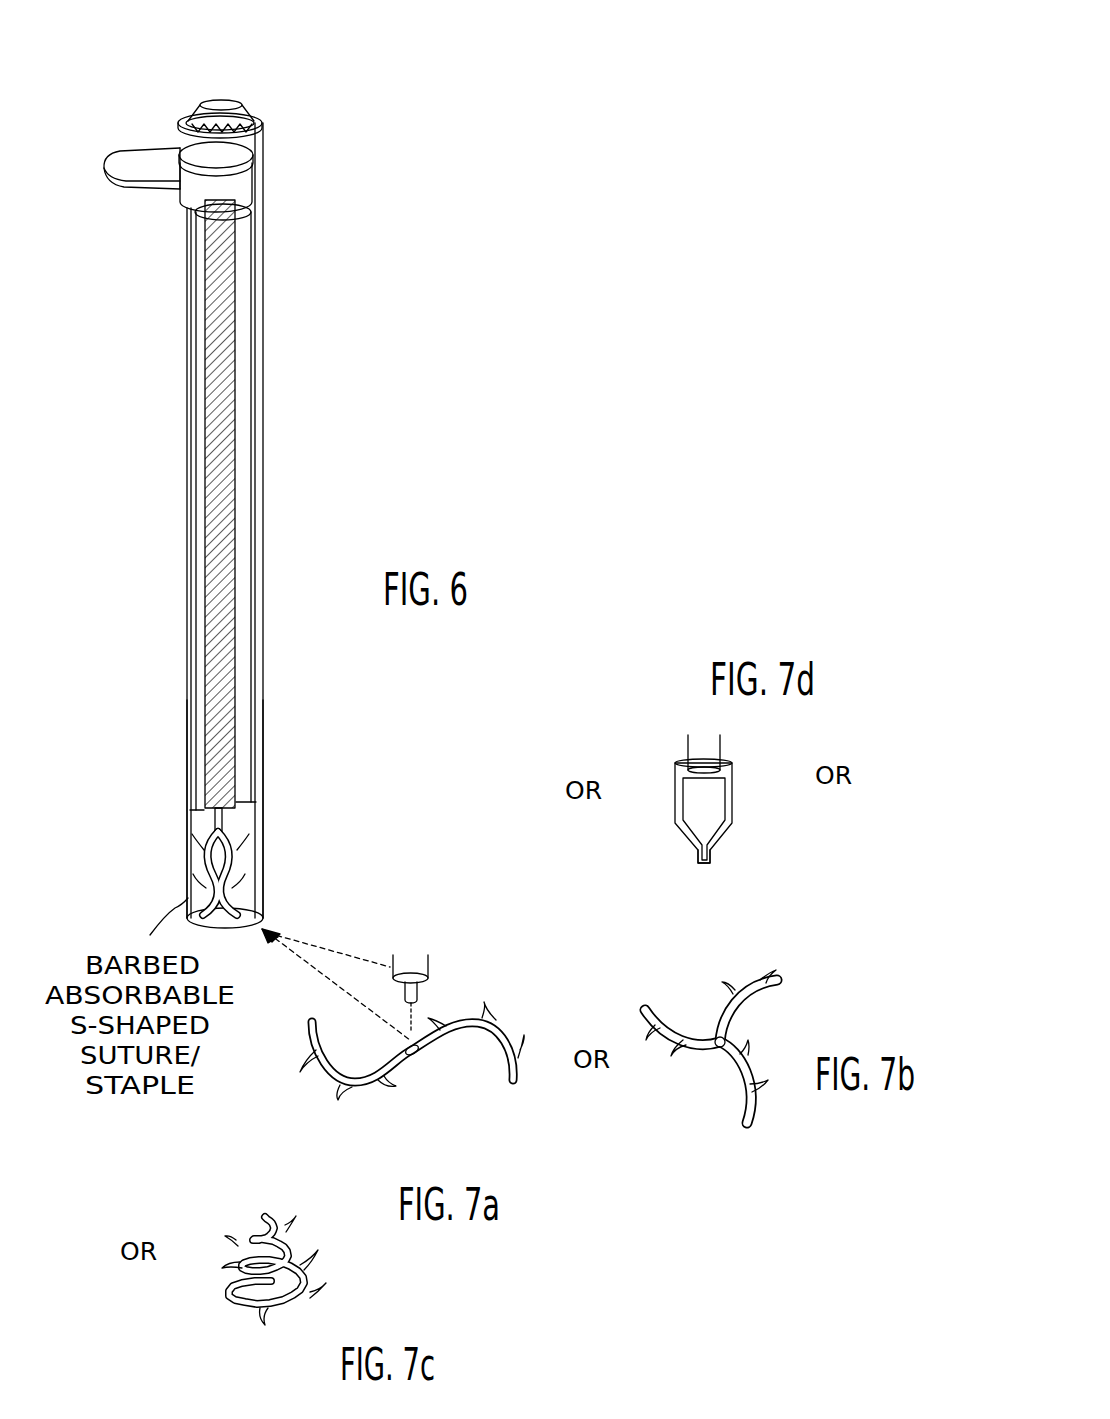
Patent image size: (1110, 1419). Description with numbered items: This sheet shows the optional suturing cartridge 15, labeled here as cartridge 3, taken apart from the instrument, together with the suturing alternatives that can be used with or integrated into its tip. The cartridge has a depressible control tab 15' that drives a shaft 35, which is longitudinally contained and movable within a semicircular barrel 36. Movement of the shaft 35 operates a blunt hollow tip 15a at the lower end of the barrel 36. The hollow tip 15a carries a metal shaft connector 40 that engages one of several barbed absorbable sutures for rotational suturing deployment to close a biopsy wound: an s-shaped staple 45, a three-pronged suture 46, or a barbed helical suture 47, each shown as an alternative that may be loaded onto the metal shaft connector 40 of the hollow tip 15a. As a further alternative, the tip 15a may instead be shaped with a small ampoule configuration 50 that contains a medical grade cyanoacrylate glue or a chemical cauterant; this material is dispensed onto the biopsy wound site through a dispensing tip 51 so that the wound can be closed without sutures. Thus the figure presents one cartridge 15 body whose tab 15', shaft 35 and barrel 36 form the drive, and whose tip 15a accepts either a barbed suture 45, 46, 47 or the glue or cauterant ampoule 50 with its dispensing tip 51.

In FIG. 6, the cartridge 3 is at (200, 108).
In FIG. 6, the control tab 15' is at (95, 164).
In FIG. 6, the suturing cartridge 15 is at (362, 525).
In FIG. 6, the shaft 35 is at (244, 348).
In FIG. 6, the semicircular barrel 36 is at (247, 440).
In FIG. 6, the blunt hollow tip 15a is at (243, 822).
In FIG. 7a, the metal shaft connector 40 is at (440, 997).
In FIG. 7a, the s-shaped staple 45 is at (317, 1072).
In FIG. 7b, the 3-pronged suture 46 is at (730, 1002).
In FIG. 7c, the barbed helical suture 47 is at (240, 1303).
In FIG. 7d, the ampoule configuration 50 is at (715, 800).
In FIG. 7d, the dispensing tip 51 is at (703, 864).